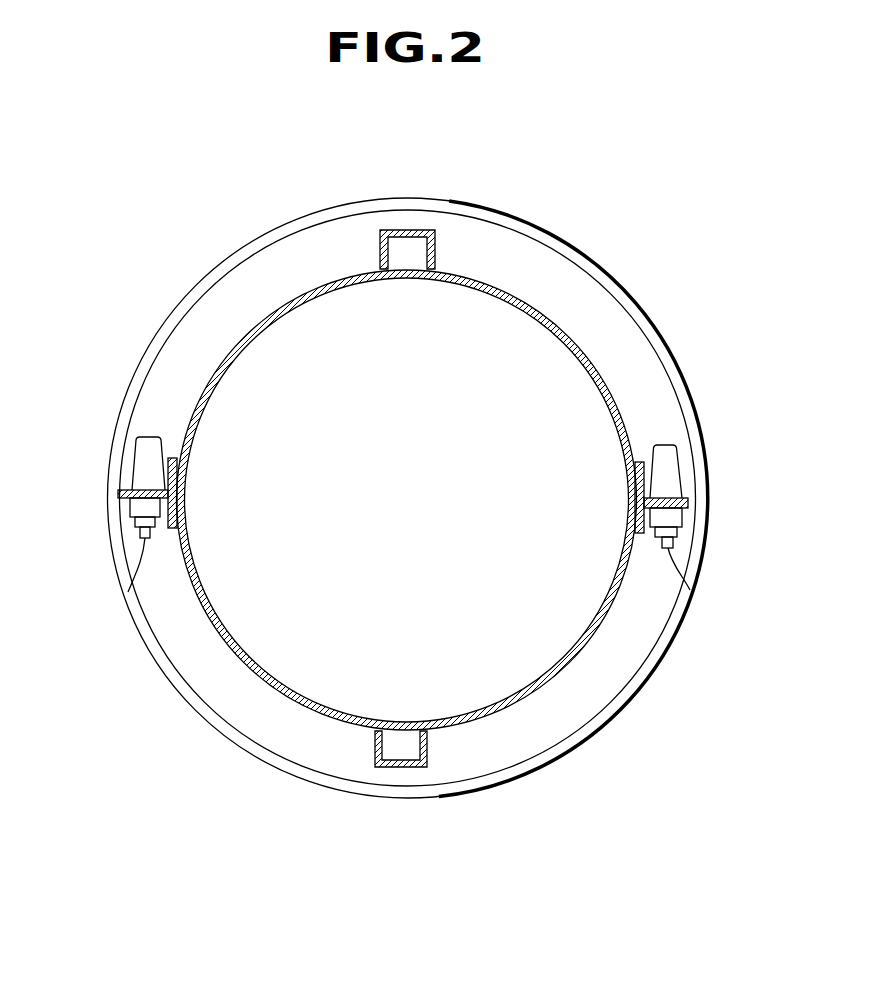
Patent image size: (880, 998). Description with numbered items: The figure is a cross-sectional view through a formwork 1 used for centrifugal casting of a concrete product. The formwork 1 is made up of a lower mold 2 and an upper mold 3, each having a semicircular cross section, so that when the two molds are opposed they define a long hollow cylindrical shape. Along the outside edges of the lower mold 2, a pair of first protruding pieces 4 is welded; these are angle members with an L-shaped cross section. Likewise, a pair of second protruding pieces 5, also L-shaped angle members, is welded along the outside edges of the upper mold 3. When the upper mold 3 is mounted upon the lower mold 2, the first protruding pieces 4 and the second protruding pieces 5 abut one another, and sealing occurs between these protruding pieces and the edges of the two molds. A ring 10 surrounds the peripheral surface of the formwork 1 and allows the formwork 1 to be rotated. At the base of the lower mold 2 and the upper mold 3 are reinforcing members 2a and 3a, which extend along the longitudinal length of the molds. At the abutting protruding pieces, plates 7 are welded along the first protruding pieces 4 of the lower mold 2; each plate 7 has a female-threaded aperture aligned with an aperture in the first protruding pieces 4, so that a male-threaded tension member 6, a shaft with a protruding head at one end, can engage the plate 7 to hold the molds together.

The formwork 1 is at (592, 316).
The lower mold 2 is at (573, 660).
The reinforcing member 2a is at (428, 768).
The upper mold 3 is at (503, 283).
The reinforcing member 3a is at (424, 231).
The first protruding piece 4 is at (122, 497).
The second protruding piece 5 is at (123, 492).
The tension member 6 is at (132, 578).
The plate 7 is at (133, 512).
The ring 10 is at (662, 357).